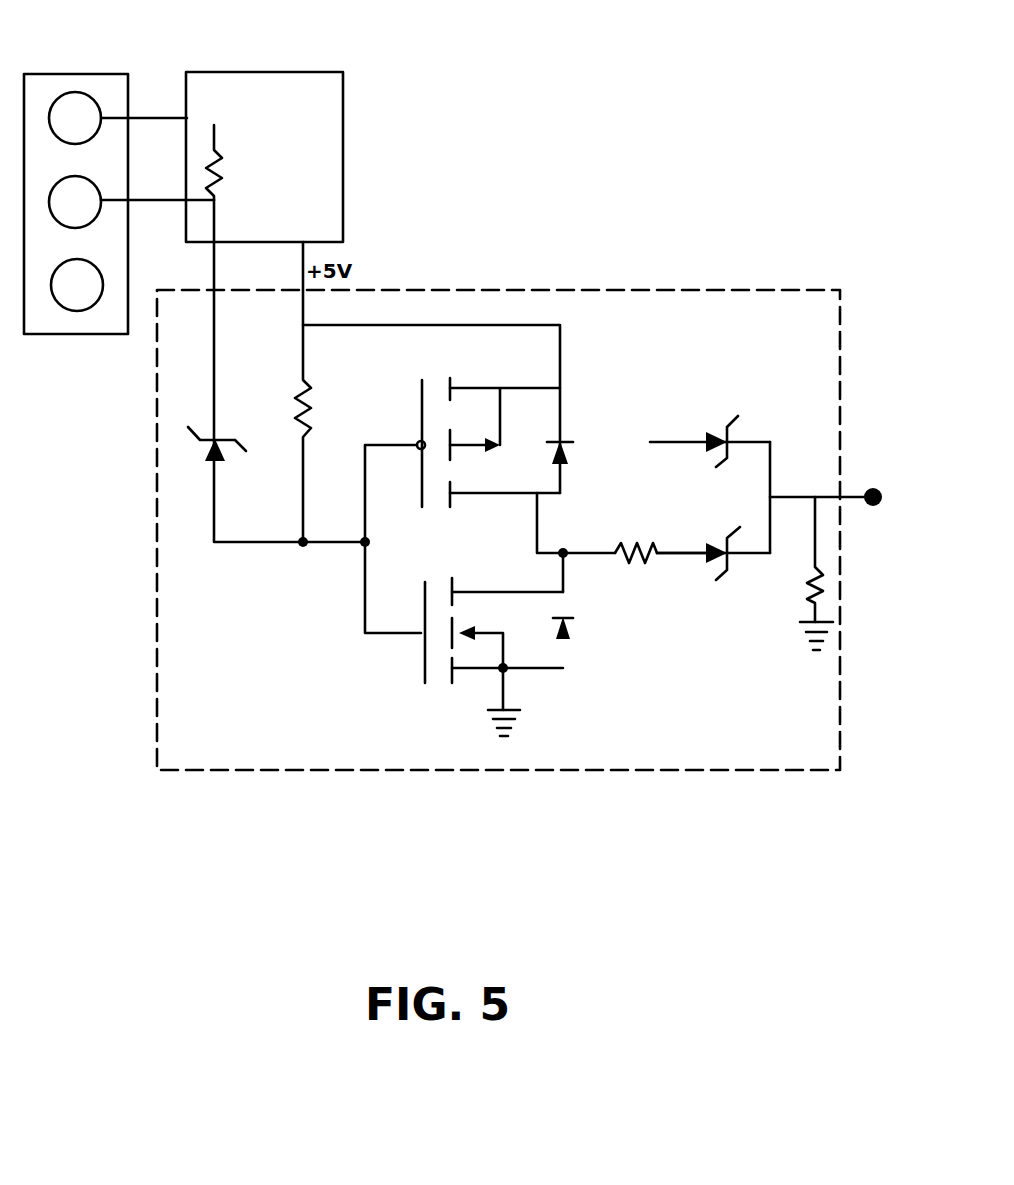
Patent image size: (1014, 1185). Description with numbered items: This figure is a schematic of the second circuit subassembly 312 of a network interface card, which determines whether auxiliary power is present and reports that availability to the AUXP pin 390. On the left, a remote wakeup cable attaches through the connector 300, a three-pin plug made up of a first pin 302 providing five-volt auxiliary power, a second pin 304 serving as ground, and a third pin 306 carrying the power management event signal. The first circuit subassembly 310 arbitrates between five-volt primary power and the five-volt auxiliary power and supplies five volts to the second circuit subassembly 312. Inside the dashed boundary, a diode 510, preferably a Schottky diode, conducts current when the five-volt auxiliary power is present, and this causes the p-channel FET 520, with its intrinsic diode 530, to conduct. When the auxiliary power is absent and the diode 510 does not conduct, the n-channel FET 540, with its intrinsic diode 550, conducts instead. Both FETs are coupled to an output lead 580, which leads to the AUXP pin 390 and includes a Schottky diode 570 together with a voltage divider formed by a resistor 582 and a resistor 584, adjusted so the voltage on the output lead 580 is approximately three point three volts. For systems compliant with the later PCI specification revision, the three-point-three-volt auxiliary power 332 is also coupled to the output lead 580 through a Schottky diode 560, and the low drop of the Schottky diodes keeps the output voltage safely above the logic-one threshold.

The connector 300 is at (99, 62).
The first pin 302 is at (94, 129).
The second pin 304 is at (94, 213).
The third pin 306 is at (96, 296).
The first circuit subassembly 310 is at (285, 169).
The second circuit subassembly 312 is at (532, 280).
The +3.3V auxiliary power 332 is at (693, 347).
The AUXP pin 390 is at (860, 474).
The diode 510 is at (163, 463).
The p-channel FET 520 is at (392, 515).
The diode 530 is at (607, 347).
The n-channel FET 540 is at (410, 639).
The diode 550 is at (612, 736).
The diode 560 is at (721, 395).
The diode 570 is at (717, 592).
The output lead 580 is at (679, 506).
The resistor 582 is at (621, 590).
The resistor 584 is at (778, 607).